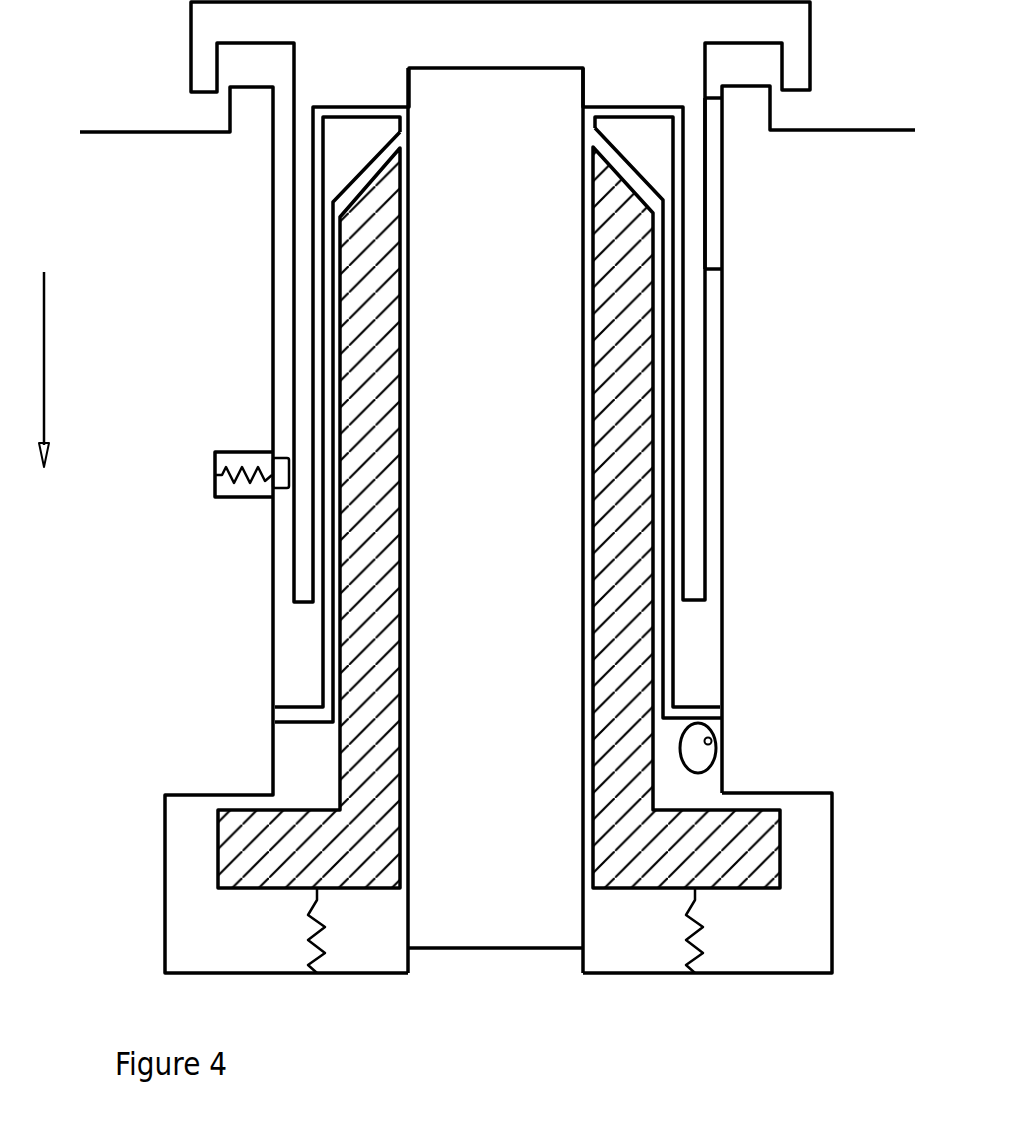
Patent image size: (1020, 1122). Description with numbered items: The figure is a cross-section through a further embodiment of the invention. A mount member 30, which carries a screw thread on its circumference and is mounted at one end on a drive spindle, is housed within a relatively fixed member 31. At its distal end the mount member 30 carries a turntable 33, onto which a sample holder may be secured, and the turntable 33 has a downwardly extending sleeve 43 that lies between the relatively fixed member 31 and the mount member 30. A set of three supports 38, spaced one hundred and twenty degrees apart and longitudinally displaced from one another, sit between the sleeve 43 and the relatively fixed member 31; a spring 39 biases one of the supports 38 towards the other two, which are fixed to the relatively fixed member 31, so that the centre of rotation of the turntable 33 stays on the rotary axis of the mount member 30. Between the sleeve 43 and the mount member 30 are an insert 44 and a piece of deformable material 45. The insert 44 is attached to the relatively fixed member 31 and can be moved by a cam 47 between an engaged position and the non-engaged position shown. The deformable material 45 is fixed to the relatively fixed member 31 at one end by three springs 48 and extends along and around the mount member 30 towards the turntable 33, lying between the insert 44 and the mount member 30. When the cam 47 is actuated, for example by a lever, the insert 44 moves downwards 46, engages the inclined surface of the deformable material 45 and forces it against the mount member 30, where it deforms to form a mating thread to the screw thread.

The mount member 30 is at (507, 712).
The relatively fixed member 31 is at (140, 705).
The turntable 33 is at (802, 21).
The supports 38 is at (722, 159).
The spring 39 is at (215, 471).
The sleeve 43 is at (705, 342).
The insert 44 is at (595, 128).
The piece of deformable material 45 is at (592, 541).
The downwards direction 46 is at (63, 362).
The cam 47 is at (717, 745).
The springs 48 is at (695, 973).